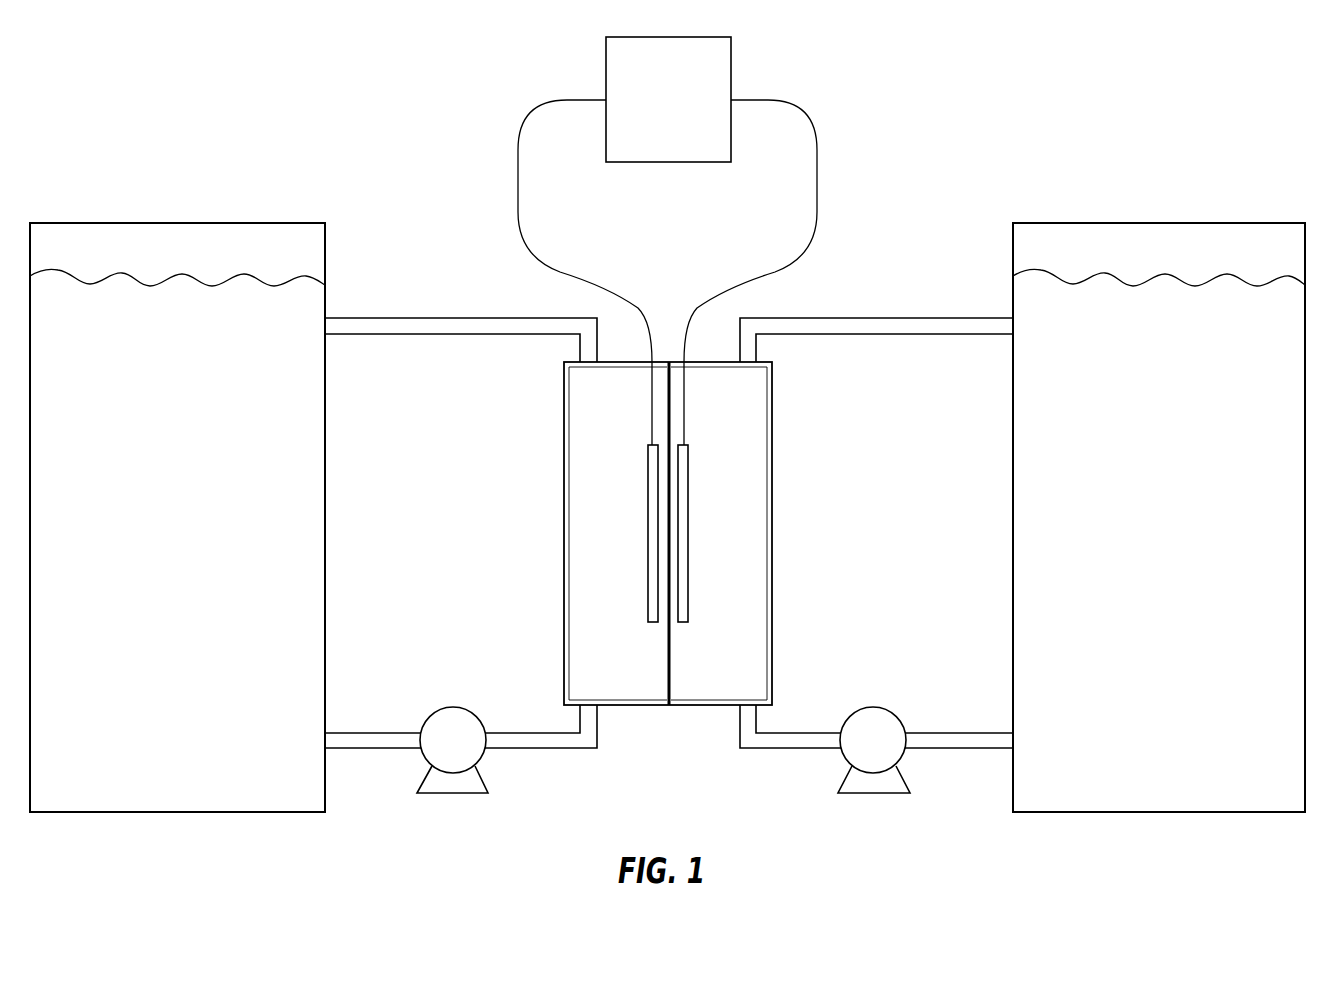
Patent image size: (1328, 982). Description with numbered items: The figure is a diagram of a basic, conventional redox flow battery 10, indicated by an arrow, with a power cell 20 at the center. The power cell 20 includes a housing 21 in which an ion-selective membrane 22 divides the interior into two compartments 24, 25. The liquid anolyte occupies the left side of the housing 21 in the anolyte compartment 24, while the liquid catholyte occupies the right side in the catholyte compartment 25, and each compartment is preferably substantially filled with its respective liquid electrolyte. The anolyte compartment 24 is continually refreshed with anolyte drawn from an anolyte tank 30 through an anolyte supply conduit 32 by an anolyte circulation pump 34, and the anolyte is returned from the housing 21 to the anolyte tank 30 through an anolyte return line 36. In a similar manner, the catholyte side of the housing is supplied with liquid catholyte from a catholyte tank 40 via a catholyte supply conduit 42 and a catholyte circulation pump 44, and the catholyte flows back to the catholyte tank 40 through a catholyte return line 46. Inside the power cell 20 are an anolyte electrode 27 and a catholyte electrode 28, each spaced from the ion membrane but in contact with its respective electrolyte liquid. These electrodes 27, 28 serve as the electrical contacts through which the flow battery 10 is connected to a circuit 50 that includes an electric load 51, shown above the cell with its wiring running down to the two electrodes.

The redox flow battery 10 is at (248, 88).
The power cell 20 is at (708, 533).
The housing 21 is at (772, 580).
The ion-selective membrane 22 is at (670, 663).
The anolyte compartment 24 is at (625, 426).
The catholyte compartment 25 is at (725, 426).
The anolyte electrode 27 is at (648, 493).
The catholyte electrode 28 is at (688, 493).
The anolyte tank 30 is at (325, 518).
The anolyte supply conduit 32 is at (390, 733).
The anolyte circulation pump 34 is at (487, 785).
The anolyte return line 36 is at (452, 318).
The catholyte tank 40 is at (1013, 520).
The catholyte supply conduit 42 is at (944, 733).
The catholyte circulation pump 44 is at (842, 788).
The catholyte return line 46 is at (886, 318).
The circuit 50 is at (828, 172).
The electric load 51 is at (683, 112).